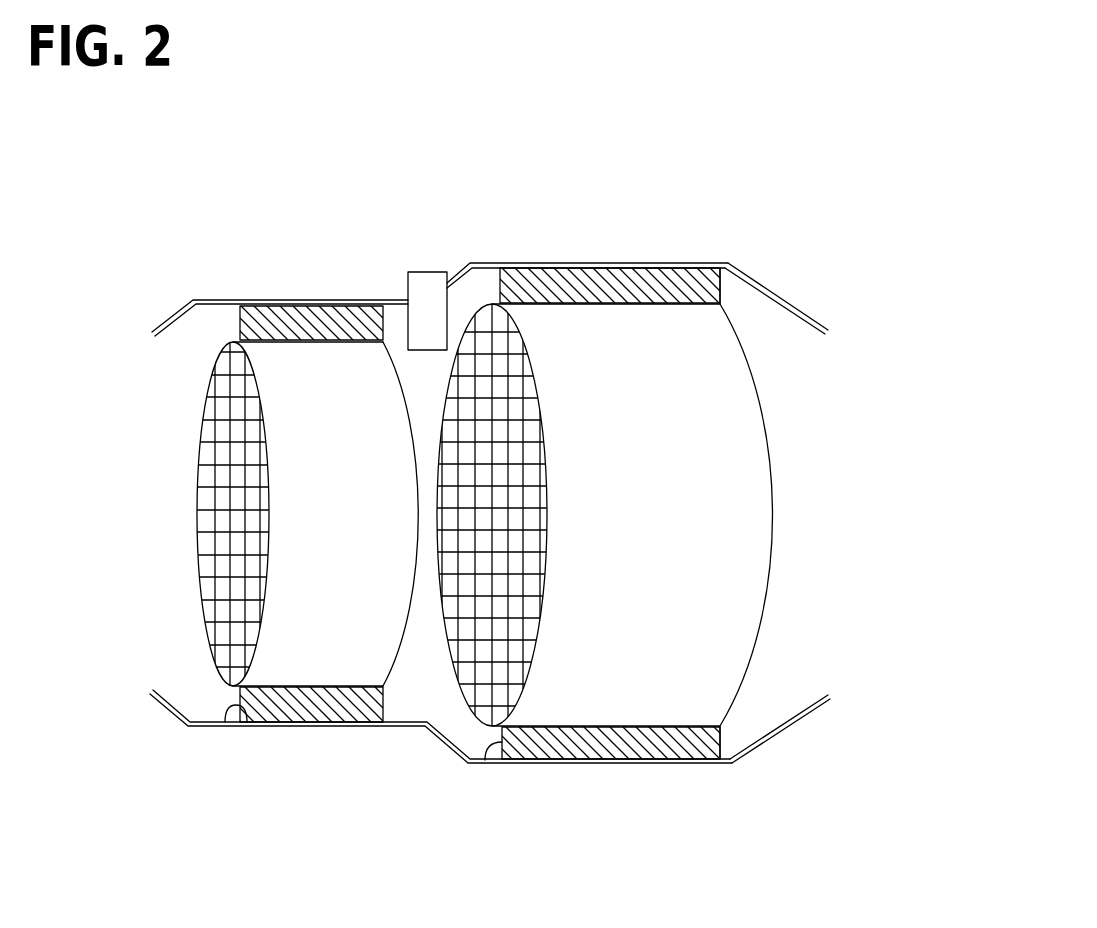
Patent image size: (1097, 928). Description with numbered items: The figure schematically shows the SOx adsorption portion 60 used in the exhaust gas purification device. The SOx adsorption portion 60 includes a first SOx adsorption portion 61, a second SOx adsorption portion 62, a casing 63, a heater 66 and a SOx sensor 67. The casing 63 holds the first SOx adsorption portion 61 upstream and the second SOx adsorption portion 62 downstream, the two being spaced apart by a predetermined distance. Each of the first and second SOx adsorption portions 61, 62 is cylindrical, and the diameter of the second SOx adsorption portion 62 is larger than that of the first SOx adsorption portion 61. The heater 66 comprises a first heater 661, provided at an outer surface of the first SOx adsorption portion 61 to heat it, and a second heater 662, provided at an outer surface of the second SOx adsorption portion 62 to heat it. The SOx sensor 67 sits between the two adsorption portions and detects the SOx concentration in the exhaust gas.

The SOx adsorption portion 60 is at (714, 224).
The first SOx adsorption portion 61 is at (197, 438).
The second SOx adsorption portion 62 is at (775, 437).
The casing 63 is at (783, 297).
The heater 66 is at (520, 832).
The first heater 661 is at (240, 320).
The second heater 662 is at (502, 302).
The SOx sensor 67 is at (420, 272).